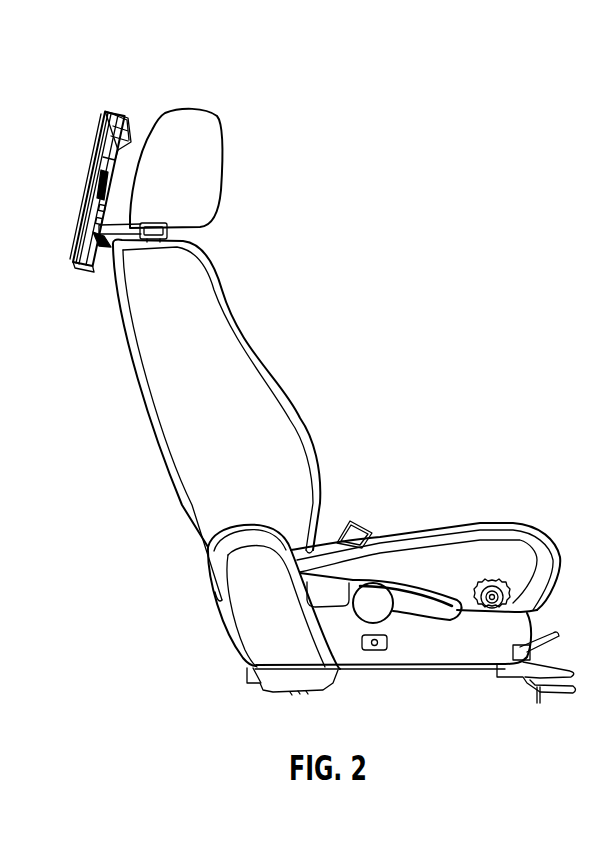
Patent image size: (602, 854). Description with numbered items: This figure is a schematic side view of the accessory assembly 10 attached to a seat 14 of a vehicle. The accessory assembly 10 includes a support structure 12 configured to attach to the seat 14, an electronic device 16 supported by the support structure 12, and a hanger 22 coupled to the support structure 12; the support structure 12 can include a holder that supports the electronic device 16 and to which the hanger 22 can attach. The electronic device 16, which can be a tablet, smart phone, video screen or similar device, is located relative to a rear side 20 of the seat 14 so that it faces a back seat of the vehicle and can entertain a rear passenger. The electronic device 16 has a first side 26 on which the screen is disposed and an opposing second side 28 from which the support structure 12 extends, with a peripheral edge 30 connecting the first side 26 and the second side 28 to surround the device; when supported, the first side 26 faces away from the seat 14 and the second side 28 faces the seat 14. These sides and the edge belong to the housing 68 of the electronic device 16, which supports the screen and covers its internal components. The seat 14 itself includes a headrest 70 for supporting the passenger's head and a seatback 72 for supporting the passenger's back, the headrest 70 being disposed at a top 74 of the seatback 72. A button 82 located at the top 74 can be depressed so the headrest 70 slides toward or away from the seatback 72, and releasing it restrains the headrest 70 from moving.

The accessory assembly 10 is at (103, 173).
The support structure 12 is at (113, 237).
The seat 14 is at (209, 406).
The electronic device 16 is at (70, 203).
The rear side 20 is at (170, 468).
The hanger 22 is at (123, 122).
The first side 26 is at (92, 176).
The second side 28 is at (122, 193).
The peripheral edge 30 is at (82, 263).
The housing 68 is at (123, 223).
The headrest 70 is at (196, 131).
The seatback 72 is at (275, 422).
The top 74 is at (193, 242).
The button 82 is at (155, 244).